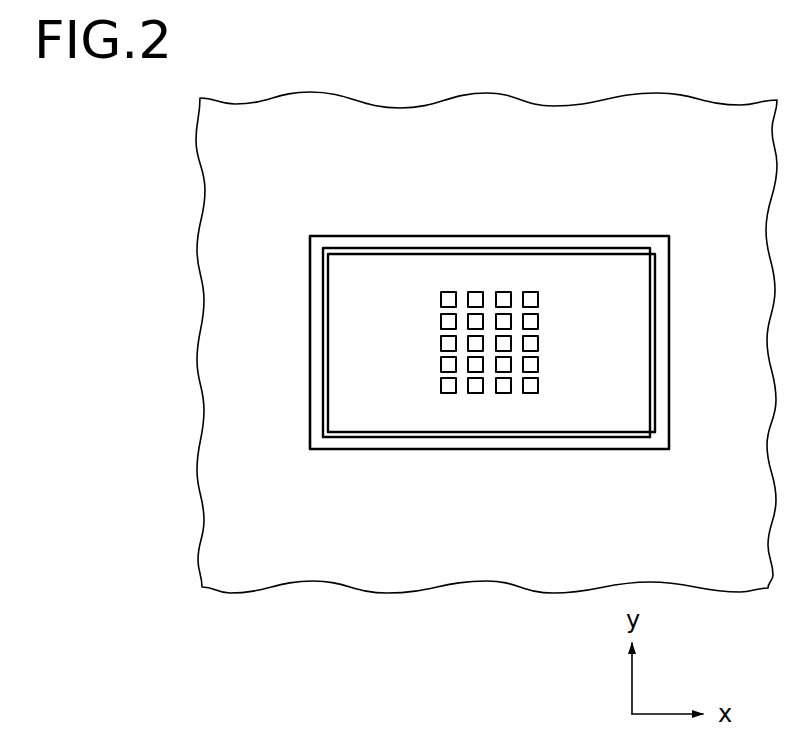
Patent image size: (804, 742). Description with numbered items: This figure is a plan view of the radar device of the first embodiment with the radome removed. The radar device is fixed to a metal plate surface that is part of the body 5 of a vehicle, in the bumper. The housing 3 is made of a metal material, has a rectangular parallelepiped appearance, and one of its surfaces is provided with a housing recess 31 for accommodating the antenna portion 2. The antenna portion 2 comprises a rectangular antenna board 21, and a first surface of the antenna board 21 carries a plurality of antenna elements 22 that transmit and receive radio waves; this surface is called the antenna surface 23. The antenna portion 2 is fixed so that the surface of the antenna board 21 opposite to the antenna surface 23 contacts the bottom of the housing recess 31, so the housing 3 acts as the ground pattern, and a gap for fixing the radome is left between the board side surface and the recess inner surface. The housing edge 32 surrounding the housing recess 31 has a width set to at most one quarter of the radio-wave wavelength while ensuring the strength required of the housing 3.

The body 5 is at (305, 128).
The housing 3 is at (438, 236).
The housing edge 32 is at (319, 280).
The housing recess 31 is at (405, 423).
The antenna portion 2 is at (582, 351).
The antenna elements 22 is at (504, 298).
The antenna board 21 is at (602, 285).
The antenna surface 23 is at (588, 394).